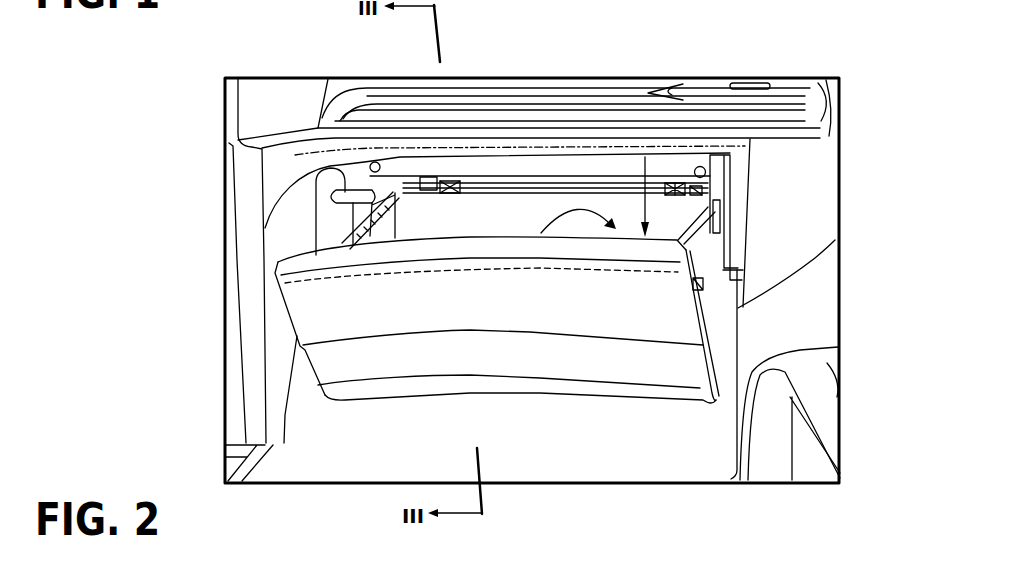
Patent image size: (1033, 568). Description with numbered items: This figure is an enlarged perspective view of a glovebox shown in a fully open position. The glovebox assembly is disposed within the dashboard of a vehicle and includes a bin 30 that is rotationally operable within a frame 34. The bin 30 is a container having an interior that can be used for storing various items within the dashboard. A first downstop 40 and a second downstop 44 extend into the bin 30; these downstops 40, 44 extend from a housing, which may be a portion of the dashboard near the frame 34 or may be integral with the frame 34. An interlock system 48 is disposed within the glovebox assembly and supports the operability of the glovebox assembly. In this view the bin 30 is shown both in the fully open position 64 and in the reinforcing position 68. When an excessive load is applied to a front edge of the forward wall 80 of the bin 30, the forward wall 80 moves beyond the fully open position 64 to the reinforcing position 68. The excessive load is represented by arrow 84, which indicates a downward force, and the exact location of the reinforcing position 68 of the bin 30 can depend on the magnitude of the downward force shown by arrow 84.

The bin 30 is at (653, 302).
The frame 34 is at (427, 177).
The first downstop 40 is at (459, 207).
The second downstop 44 is at (701, 190).
The interlock system 48 is at (423, 204).
The fully open position 64 is at (548, 230).
The reinforcing position 68 is at (317, 288).
The forward wall 80 is at (300, 258).
The arrow 84 is at (639, 172).